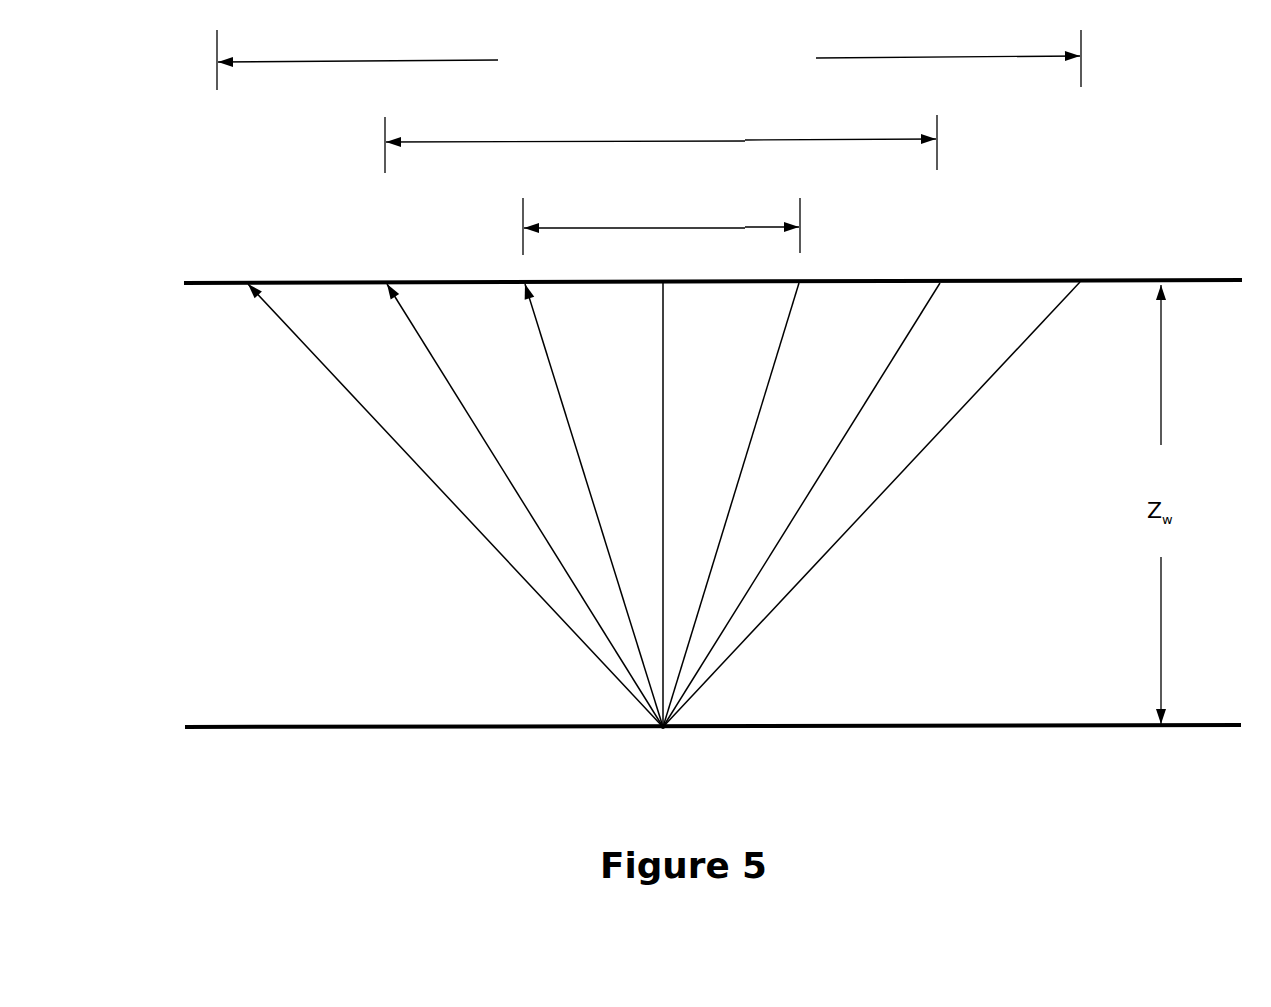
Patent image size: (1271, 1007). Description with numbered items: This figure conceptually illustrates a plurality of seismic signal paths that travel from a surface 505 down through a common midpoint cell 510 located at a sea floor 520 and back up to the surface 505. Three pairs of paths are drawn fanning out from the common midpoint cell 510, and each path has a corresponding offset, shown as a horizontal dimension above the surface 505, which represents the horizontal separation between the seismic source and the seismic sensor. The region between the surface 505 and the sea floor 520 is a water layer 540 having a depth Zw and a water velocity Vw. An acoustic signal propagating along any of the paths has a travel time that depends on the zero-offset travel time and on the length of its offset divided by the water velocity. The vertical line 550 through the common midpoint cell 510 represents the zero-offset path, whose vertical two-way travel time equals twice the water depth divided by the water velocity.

The surface 505 is at (329, 281).
The sea floor 520 is at (415, 726).
The common midpoint cell 510 is at (667, 748).
The line 550 is at (664, 393).
The water layer 540 is at (186, 442).